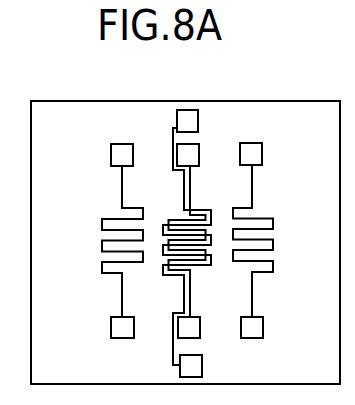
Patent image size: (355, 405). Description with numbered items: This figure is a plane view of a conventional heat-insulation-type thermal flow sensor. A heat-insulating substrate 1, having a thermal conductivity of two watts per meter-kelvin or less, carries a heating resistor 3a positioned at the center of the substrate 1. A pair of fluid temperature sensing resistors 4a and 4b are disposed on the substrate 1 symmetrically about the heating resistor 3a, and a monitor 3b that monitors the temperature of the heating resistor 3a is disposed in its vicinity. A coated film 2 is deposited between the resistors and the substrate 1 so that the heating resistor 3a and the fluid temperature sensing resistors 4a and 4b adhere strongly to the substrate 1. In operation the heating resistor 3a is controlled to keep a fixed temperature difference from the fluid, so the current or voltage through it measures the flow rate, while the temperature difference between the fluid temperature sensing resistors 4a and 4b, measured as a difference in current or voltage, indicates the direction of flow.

The heat-insulating substrate 1 is at (117, 114).
The coated film 2 is at (185, 242).
The heating resistor 3a is at (189, 116).
The monitor 3b is at (198, 156).
The fluid temperature sensing resistor 4a is at (257, 152).
The fluid temperature sensing resistor 4b is at (111, 147).